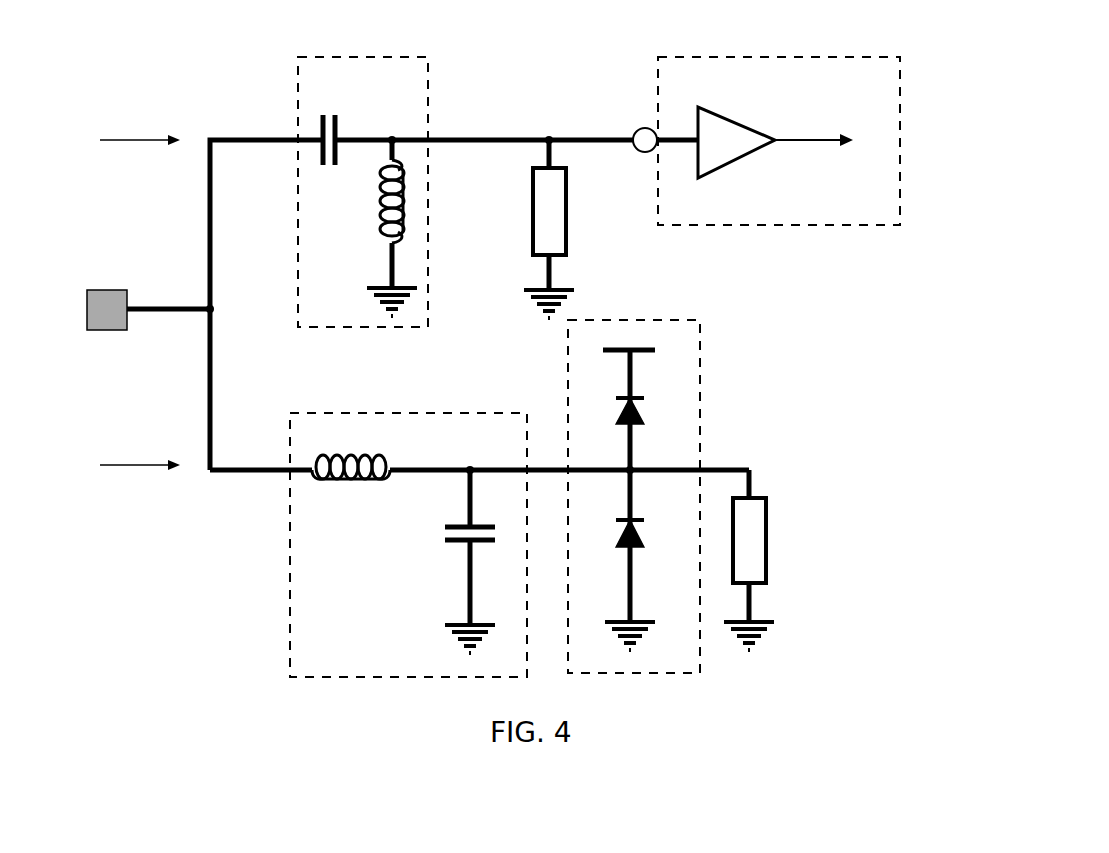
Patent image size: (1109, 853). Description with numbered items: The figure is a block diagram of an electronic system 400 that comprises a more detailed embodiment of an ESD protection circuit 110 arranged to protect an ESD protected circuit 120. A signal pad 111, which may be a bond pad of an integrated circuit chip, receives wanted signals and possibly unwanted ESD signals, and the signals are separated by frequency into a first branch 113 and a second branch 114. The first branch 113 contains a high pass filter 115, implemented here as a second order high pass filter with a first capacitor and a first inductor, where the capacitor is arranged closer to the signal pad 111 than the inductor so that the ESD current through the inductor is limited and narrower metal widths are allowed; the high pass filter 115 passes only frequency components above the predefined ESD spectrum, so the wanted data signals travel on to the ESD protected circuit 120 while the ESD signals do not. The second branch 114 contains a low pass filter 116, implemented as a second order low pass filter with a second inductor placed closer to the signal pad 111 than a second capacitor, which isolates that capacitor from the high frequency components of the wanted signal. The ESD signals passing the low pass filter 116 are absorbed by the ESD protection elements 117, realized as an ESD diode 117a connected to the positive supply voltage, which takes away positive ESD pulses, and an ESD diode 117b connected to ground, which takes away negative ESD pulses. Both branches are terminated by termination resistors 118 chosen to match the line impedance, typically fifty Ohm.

The ESD protection circuit 110 is at (150, 74).
The signal pad 111 is at (105, 318).
The first branch 113 is at (136, 139).
The second branch 114 is at (144, 462).
The high pass filter 115 is at (430, 84).
The low pass filter 116 is at (452, 413).
The ESD protection elements 117 is at (714, 481).
The ESD diode 117a is at (646, 414).
The ESD diode 117b is at (678, 558).
The termination resistor 118 is at (766, 532).
The ESD protected circuit 120 is at (900, 190).
The electronic system 400 is at (985, 713).